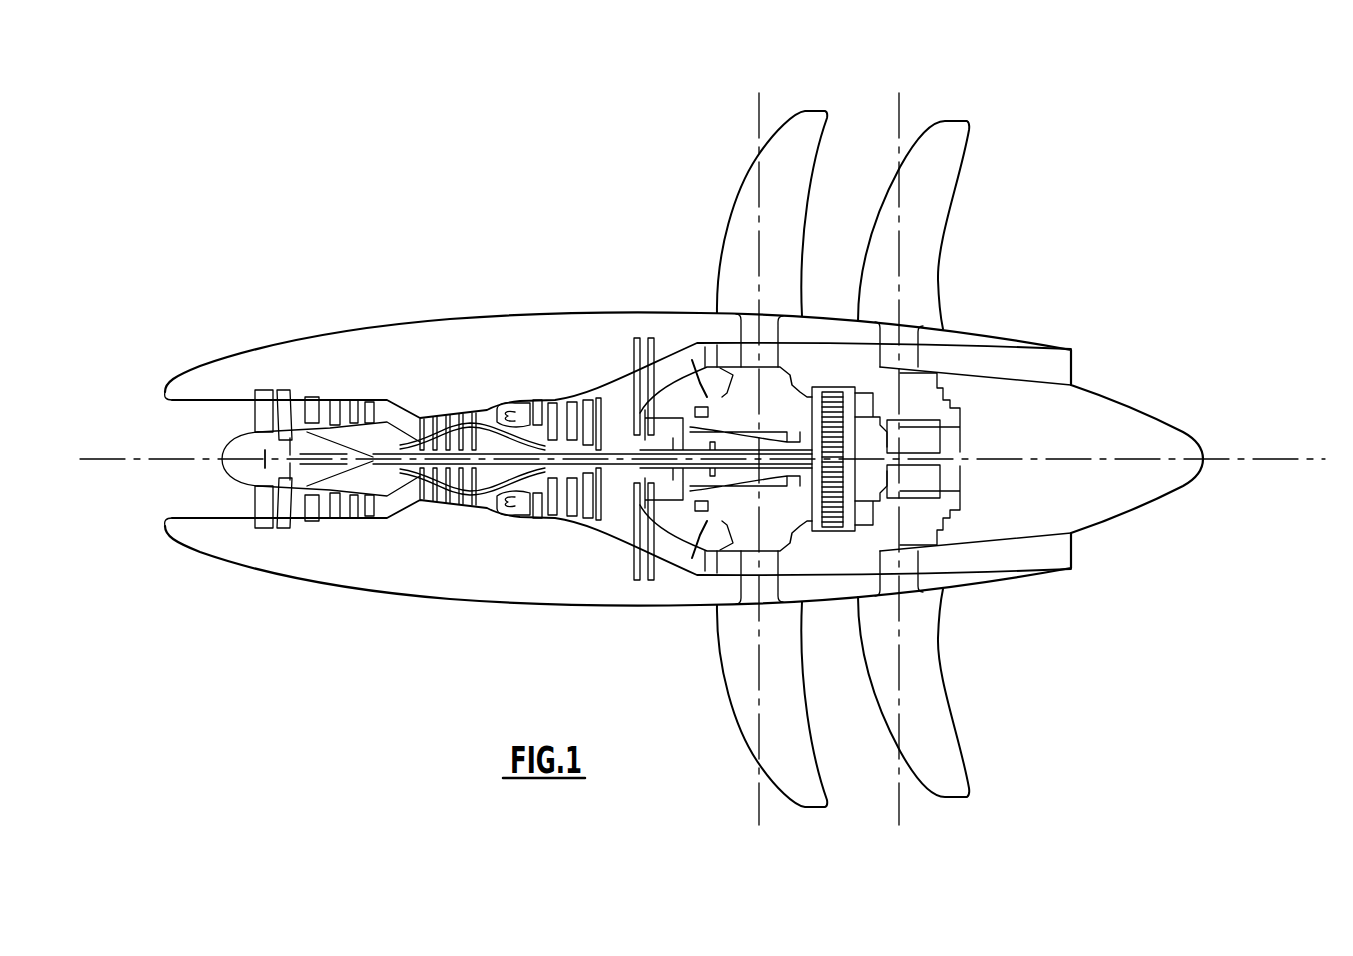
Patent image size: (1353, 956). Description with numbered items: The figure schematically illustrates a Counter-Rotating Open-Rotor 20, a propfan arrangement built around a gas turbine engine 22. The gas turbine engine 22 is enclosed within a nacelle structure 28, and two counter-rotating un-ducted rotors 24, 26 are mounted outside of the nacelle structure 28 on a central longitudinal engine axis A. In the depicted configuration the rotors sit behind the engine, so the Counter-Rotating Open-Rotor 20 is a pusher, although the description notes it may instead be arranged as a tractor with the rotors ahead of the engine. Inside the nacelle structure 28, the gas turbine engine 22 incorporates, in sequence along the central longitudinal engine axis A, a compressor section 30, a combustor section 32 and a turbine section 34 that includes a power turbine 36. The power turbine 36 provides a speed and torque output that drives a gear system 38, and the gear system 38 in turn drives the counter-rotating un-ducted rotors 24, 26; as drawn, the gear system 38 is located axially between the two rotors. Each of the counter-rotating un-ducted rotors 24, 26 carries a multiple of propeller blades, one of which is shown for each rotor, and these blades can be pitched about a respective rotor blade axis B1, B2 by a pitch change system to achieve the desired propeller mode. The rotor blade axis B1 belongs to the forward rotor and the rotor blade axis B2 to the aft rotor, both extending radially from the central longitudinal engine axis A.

The Counter-Rotating Open-Rotor 20 is at (960, 80).
The gas turbine engine 22 is at (350, 398).
The counter-rotating un-ducted rotor 24 is at (732, 548).
The counter-rotating un-ducted rotor 26 is at (965, 537).
The nacelle structure 28 is at (413, 573).
The compressor section 30 is at (312, 507).
The combustor section 32 is at (518, 507).
The turbine section 34 is at (602, 523).
The power turbine 36 is at (618, 400).
The gear system 38 is at (858, 455).
The central longitudinal engine axis A is at (1301, 460).
The rotor blade axis B1 is at (758, 110).
The rotor blade axis B2 is at (898, 110).